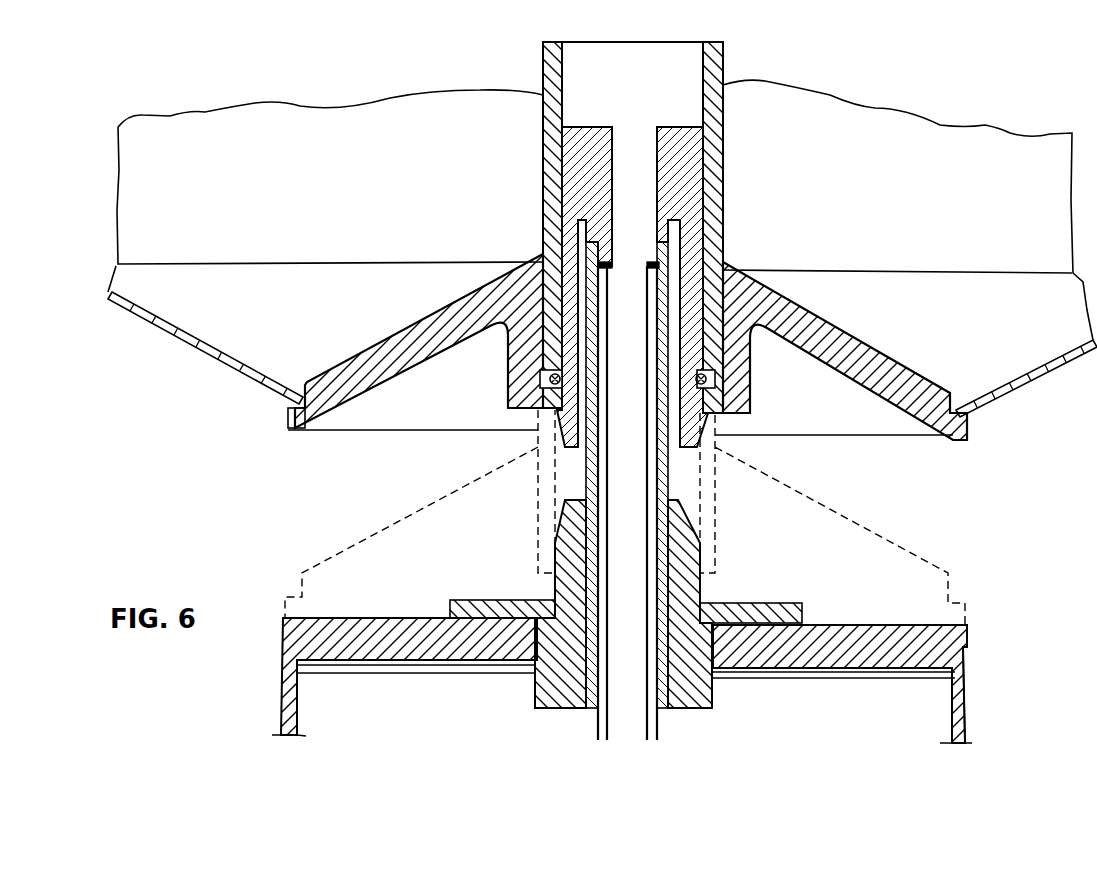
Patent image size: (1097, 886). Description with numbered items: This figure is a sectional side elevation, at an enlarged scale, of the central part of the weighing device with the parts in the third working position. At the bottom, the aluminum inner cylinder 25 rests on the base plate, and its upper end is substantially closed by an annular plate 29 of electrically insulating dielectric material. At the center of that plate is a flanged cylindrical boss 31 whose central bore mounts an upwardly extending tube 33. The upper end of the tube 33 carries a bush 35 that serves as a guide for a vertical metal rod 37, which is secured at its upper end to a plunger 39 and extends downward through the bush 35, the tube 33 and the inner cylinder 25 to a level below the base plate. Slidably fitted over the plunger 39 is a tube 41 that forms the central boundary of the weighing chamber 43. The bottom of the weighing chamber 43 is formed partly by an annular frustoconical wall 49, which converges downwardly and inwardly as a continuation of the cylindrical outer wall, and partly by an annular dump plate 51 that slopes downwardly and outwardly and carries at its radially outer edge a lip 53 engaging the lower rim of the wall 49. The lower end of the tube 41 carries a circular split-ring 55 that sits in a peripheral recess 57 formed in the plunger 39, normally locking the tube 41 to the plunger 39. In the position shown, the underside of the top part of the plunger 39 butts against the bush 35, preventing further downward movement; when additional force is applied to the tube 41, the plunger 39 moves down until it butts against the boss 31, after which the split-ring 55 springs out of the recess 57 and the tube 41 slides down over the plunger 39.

The inner cylinder 25 is at (958, 707).
The annular plate 29 is at (853, 660).
The flanged cylindrical boss 31 is at (552, 687).
The tube 33 is at (588, 472).
The bush 35 is at (672, 230).
The metal rod 37 is at (643, 478).
The plunger 39 is at (690, 248).
The tube 41 is at (543, 164).
The weighing chamber 43 is at (908, 204).
The frustoconical wall 49 is at (1033, 378).
The dump plate 51 is at (847, 347).
The lip 53 is at (293, 425).
The split-ring 55 is at (553, 378).
The peripheral recess 57 is at (558, 377).